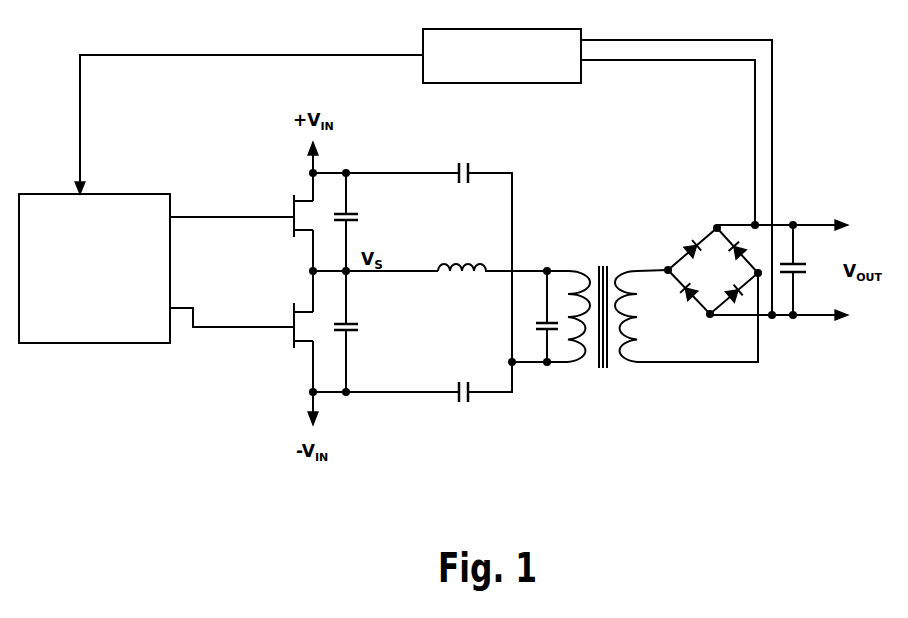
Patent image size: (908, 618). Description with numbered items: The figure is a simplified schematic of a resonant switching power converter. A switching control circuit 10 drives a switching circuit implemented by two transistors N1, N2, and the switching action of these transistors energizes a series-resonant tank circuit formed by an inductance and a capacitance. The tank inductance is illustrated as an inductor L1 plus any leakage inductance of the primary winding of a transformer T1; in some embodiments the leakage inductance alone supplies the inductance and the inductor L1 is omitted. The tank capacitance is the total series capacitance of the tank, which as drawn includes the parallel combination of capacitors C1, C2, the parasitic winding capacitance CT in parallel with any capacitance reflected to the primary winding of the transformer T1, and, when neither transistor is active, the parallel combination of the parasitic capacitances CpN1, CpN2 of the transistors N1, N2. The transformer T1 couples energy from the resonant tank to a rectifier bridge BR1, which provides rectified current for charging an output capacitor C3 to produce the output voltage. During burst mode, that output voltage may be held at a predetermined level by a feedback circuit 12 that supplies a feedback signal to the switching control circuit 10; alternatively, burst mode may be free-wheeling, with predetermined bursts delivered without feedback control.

The switching control circuit 10 is at (94, 268).
The feedback circuit 12 is at (502, 56).
The transistor N1 is at (289, 222).
The transistor N2 is at (289, 331).
The parasitic capacitance of transistor N1 CpN1 is at (367, 222).
The parasitic capacitance of transistor N2 CpN2 is at (367, 331).
The capacitor C1 is at (465, 406).
The capacitor C2 is at (462, 160).
The inductor L1 is at (462, 249).
The parasitic winding capacitance CT is at (539, 316).
The transformer T1 is at (602, 300).
The rectifier bridge BR1 is at (713, 271).
The output capacitor C3 is at (801, 270).